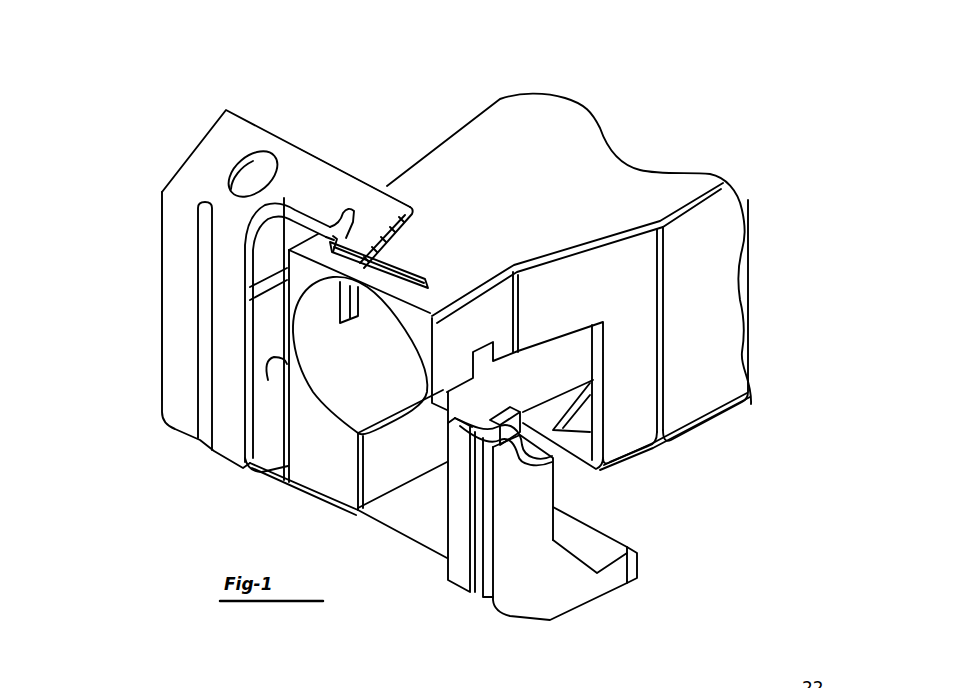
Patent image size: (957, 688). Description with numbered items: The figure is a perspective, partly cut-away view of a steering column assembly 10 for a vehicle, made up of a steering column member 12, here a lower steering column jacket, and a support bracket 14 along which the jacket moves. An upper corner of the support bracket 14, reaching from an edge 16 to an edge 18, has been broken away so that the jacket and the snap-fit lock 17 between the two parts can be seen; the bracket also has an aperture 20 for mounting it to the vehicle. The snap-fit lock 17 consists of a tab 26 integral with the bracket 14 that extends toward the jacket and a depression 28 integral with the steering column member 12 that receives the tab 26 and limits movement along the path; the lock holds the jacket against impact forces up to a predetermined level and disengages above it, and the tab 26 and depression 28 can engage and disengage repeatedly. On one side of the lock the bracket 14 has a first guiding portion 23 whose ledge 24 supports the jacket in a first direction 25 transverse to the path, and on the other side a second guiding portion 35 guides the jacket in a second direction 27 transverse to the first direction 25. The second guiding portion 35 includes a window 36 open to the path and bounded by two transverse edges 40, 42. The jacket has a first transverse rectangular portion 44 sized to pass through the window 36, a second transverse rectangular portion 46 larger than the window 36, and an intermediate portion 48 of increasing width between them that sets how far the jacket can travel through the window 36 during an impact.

The steering column assembly 10 is at (559, 84).
The steering column member 12 is at (721, 429).
The support bracket 14 is at (186, 130).
The edge 16 is at (417, 209).
The snap-fit lock 17 is at (130, 191).
The edge 18 is at (529, 440).
The aperture 20 is at (253, 152).
The first guiding portion 23 is at (735, 560).
The ledge 24 is at (622, 545).
The first direction 25 is at (403, 598).
The tab 26 is at (386, 181).
The second direction 27 is at (146, 316).
The depression 28 is at (432, 280).
The second guiding portion 35 is at (161, 527).
The window 36 is at (319, 509).
The transverse edge 40 is at (236, 416).
The transverse edge 42 is at (445, 503).
The first transverse rectangular portion 44 is at (320, 238).
The second transverse rectangular portion 46 is at (718, 342).
The intermediate portion 48 is at (625, 428).